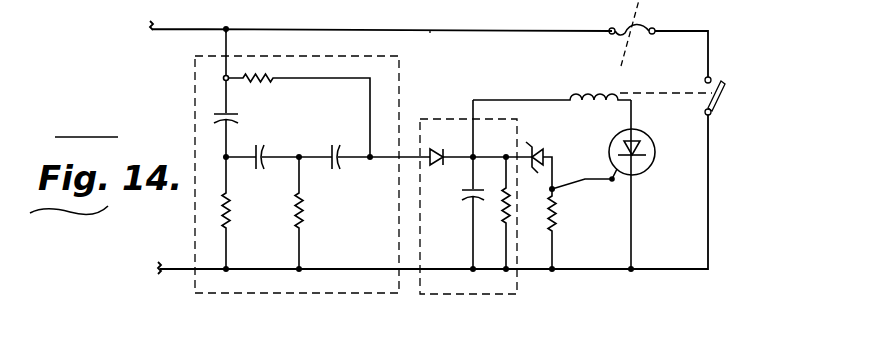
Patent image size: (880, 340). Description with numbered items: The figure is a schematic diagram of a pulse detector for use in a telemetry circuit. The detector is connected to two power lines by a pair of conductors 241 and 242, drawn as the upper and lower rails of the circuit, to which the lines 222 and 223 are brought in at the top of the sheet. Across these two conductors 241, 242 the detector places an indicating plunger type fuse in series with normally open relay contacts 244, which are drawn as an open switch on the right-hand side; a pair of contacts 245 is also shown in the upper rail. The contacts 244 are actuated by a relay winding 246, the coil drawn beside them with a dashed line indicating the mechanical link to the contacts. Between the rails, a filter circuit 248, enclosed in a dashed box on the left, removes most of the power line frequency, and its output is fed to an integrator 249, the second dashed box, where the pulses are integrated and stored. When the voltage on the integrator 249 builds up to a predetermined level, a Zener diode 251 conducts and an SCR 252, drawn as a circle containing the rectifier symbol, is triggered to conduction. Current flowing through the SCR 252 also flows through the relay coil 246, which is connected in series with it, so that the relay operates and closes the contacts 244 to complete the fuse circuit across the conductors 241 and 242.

The conductor 222 is at (256, 16).
The conductor 223 is at (454, 16).
The conductor 241 is at (174, 31).
The conductor 242 is at (180, 270).
The normally open relay contacts 244 is at (727, 84).
The switch contacts 245 is at (612, 27).
The relay winding 246 is at (590, 93).
The filter circuit 248 is at (264, 296).
The integrator 249 is at (455, 296).
The Zener diode 251 is at (536, 155).
The SCR 252 is at (655, 160).